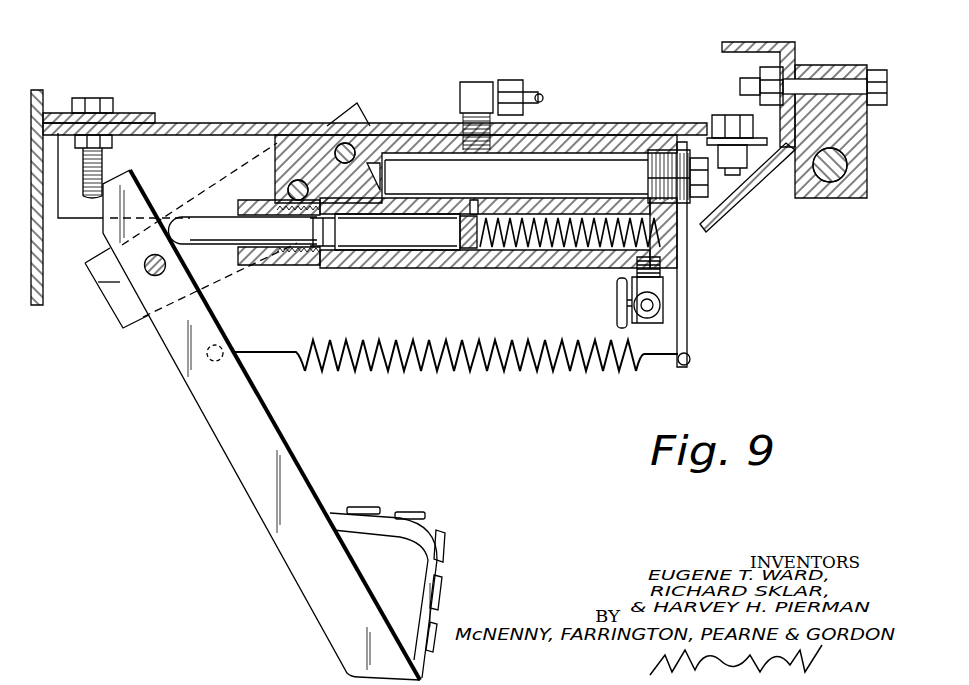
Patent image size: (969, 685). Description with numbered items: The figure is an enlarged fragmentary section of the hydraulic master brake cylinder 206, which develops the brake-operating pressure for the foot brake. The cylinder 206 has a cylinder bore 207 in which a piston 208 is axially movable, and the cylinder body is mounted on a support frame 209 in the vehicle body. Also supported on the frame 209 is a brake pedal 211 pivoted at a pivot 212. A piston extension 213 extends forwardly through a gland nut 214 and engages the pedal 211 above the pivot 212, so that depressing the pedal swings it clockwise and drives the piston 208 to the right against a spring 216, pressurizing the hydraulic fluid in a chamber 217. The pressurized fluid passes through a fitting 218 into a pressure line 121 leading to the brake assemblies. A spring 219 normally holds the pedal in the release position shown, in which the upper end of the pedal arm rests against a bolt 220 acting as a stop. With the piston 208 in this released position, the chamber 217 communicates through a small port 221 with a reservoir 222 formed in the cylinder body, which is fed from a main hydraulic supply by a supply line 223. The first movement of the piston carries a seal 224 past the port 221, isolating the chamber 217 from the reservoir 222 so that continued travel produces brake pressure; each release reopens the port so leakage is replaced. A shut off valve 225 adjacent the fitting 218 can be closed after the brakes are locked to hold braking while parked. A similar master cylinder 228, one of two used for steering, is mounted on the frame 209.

The pressure line 121 is at (664, 323).
The master brake cylinder 206 is at (504, 266).
The cylinder bore 207 is at (552, 246).
The piston 208 is at (383, 243).
The support frame 209 is at (236, 122).
The brake pedal 211 is at (283, 432).
The pivot 212 is at (119, 284).
The piston extension 213 is at (204, 234).
The gland nut 214 is at (263, 265).
The spring 216 is at (666, 222).
The chamber 217 is at (597, 247).
The fitting 218 is at (663, 285).
The spring 219 is at (496, 372).
The bolt 220 is at (106, 162).
The port 221 is at (474, 215).
The reservoir 222 is at (647, 169).
The supply line 223 is at (527, 90).
The seal 224 is at (471, 243).
The shut off valve 225 is at (660, 303).
The master cylinder 228 is at (840, 196).